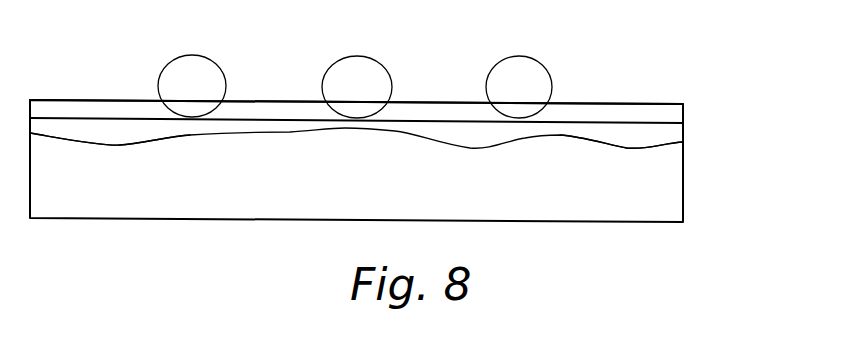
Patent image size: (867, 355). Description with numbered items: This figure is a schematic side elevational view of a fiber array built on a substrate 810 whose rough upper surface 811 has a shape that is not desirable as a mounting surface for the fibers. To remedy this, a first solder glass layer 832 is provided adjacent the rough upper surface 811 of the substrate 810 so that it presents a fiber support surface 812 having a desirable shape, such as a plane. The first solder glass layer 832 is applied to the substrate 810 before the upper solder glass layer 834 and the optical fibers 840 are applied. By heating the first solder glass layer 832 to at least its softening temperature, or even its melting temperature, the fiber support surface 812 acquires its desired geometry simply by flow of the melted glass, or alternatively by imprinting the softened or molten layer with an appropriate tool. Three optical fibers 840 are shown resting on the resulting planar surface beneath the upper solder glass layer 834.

The substrate 810 is at (683, 199).
The rough upper surface 811 is at (130, 144).
The fiber support surface 812 is at (633, 126).
The first solder glass layer 832 is at (673, 127).
The upper solder glass layer 834 is at (683, 108).
The optical fibers 840 is at (200, 75).